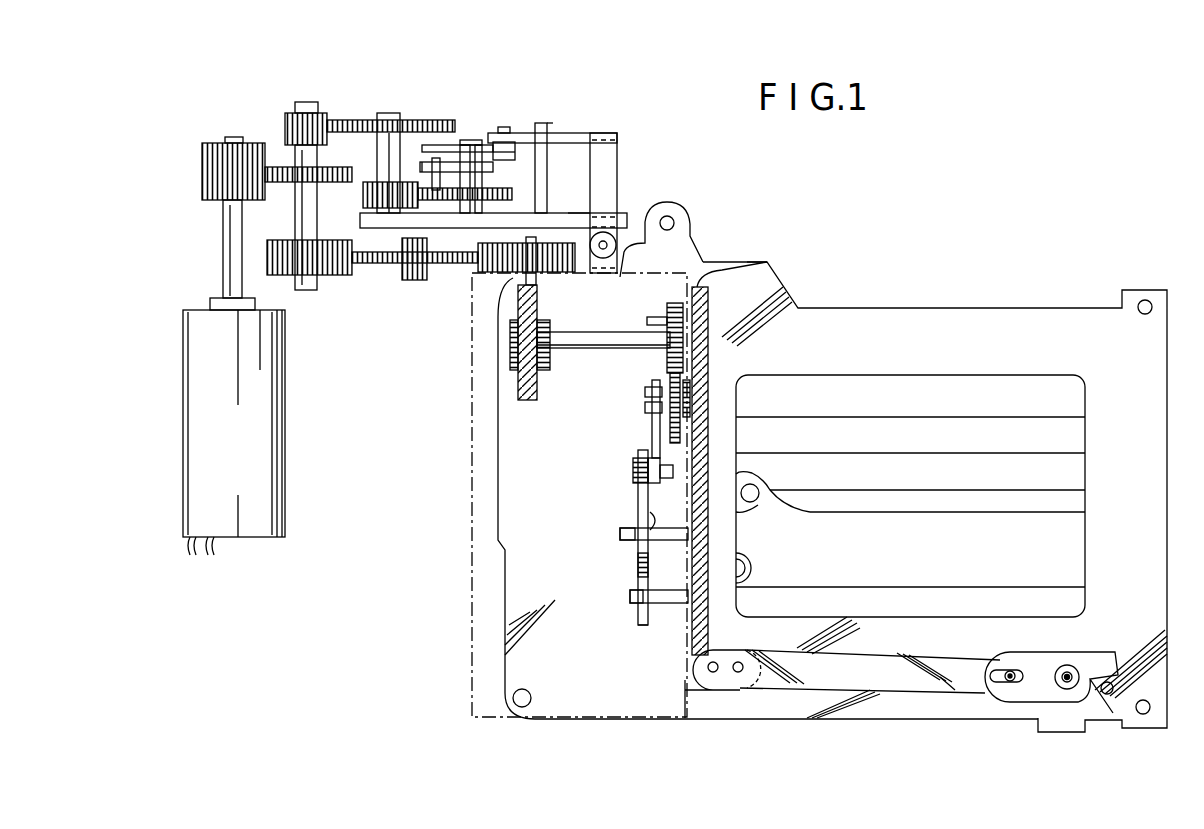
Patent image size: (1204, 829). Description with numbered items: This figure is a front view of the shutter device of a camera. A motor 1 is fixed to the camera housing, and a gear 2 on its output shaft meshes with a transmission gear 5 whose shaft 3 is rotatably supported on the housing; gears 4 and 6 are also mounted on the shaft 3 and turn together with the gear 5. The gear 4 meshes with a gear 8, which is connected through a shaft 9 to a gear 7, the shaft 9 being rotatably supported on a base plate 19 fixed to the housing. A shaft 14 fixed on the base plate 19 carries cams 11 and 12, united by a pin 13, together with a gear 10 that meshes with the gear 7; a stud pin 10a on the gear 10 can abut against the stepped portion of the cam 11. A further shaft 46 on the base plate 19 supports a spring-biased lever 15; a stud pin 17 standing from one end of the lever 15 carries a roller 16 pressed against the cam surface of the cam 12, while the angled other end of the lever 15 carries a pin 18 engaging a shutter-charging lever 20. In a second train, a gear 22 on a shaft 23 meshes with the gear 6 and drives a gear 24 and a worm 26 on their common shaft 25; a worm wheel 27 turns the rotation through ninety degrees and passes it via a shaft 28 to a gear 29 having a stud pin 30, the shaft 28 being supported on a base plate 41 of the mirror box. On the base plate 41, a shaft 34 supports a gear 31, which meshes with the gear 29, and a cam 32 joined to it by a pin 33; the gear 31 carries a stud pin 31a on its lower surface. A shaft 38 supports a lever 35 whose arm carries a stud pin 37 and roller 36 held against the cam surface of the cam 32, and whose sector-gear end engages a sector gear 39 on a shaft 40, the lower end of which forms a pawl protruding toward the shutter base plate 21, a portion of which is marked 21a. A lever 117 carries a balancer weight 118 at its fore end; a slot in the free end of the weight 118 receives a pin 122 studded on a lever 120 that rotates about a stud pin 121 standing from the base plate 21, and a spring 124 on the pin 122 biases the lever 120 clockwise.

The motor 1 is at (279, 437).
The gear 2 is at (216, 143).
The shaft 3 is at (306, 222).
The gear 4 is at (296, 114).
The transmission gear 5 is at (327, 183).
The gear 6 is at (322, 275).
The gear 7 is at (372, 182).
The gear 8 is at (418, 120).
The shaft 9 is at (381, 113).
The gear 10 is at (510, 186).
The stud pin 10a is at (422, 165).
The cam 11 is at (515, 161).
The cam 12 is at (445, 147).
The pin 13 is at (477, 141).
The shaft 14 is at (512, 207).
The lever 15 is at (592, 137).
The roller 16 is at (524, 154).
The stud pin 17 is at (507, 128).
The pin 18 is at (687, 218).
The base plate 19 is at (568, 216).
The shutter-charging lever 20 is at (618, 259).
The shutter base plate 21 is at (722, 272).
The cassette holder 21a is at (858, 376).
The gear 22 is at (365, 264).
The shaft 23 is at (410, 276).
The gear 24 is at (474, 278).
The shaft 25 is at (534, 282).
The worm 26 is at (548, 372).
The worm wheel 27 is at (524, 400).
The shaft 28 is at (582, 340).
The gear 29 is at (747, 264).
The stud pin 30 is at (652, 318).
The gear 31 is at (672, 382).
The stud pin 31a is at (690, 368).
The cam 32 is at (655, 434).
The pin 33 is at (645, 391).
The shaft 34 is at (645, 410).
The lever 35 is at (640, 503).
The roller 36 is at (650, 512).
The stud pin 37 is at (634, 470).
The shaft 38 is at (503, 658).
The sector gear 39 is at (642, 615).
The shaft 40 is at (630, 598).
The base plate 41 is at (710, 312).
The shaft 46 is at (547, 123).
The lever 117 is at (707, 688).
The balancer weight 118 is at (857, 668).
The lever 120 is at (1103, 667).
The stud pin 121 is at (1065, 690).
The pin 122 is at (1007, 682).
The spring 124 is at (978, 690).